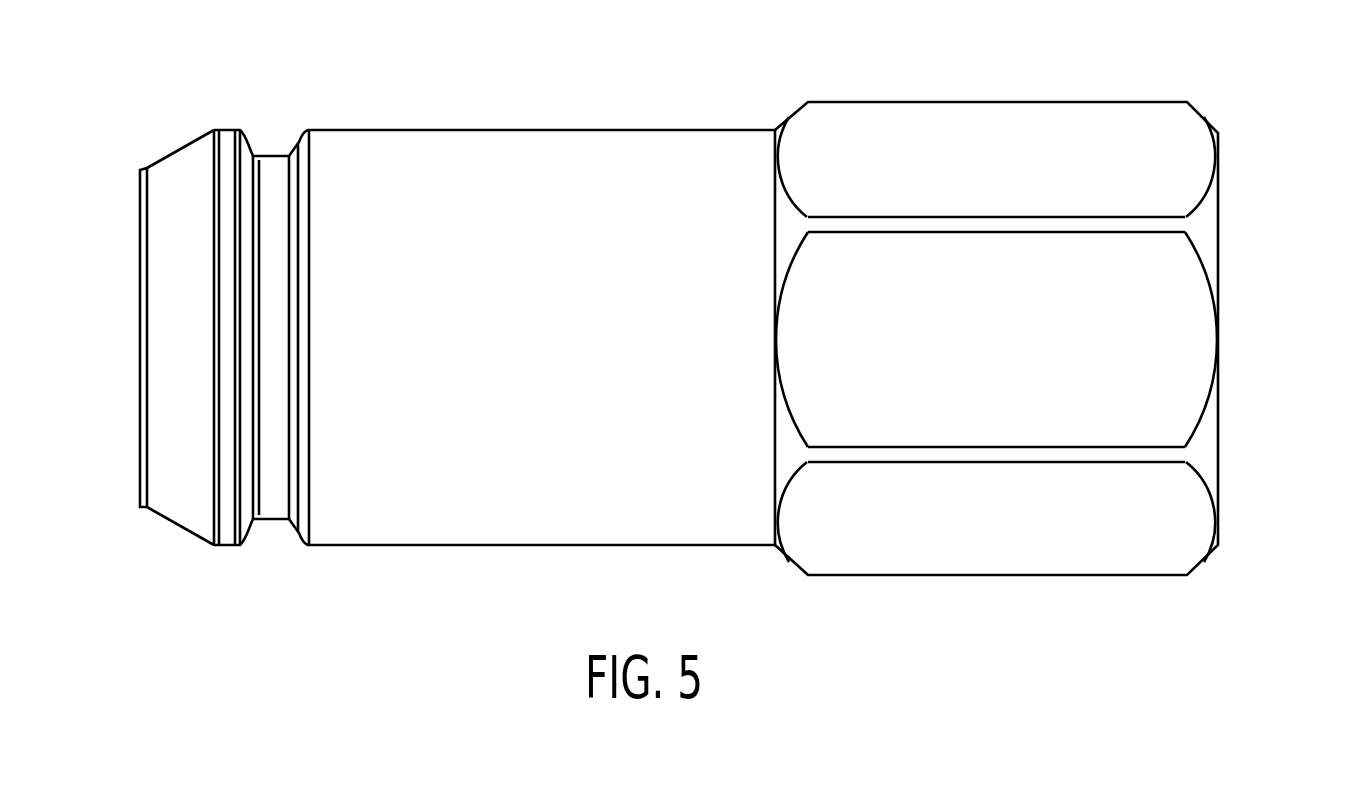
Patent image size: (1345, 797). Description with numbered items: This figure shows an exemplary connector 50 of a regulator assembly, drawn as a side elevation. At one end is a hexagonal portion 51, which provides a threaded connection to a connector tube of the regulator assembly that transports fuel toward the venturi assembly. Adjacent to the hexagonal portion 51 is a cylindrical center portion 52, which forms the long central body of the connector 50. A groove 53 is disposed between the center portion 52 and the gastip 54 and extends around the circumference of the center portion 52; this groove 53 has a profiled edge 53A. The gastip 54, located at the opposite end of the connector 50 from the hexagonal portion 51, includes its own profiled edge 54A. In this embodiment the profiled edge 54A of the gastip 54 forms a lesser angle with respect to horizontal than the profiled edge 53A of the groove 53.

The connector 50 is at (1240, 233).
The hexagonal portion 51 is at (1003, 102).
The cylindrical center portion 52 is at (553, 130).
The groove 53 is at (282, 157).
The profiled edge 53A is at (255, 147).
The gastip 54 is at (165, 167).
The profiled edge 54A is at (181, 150).